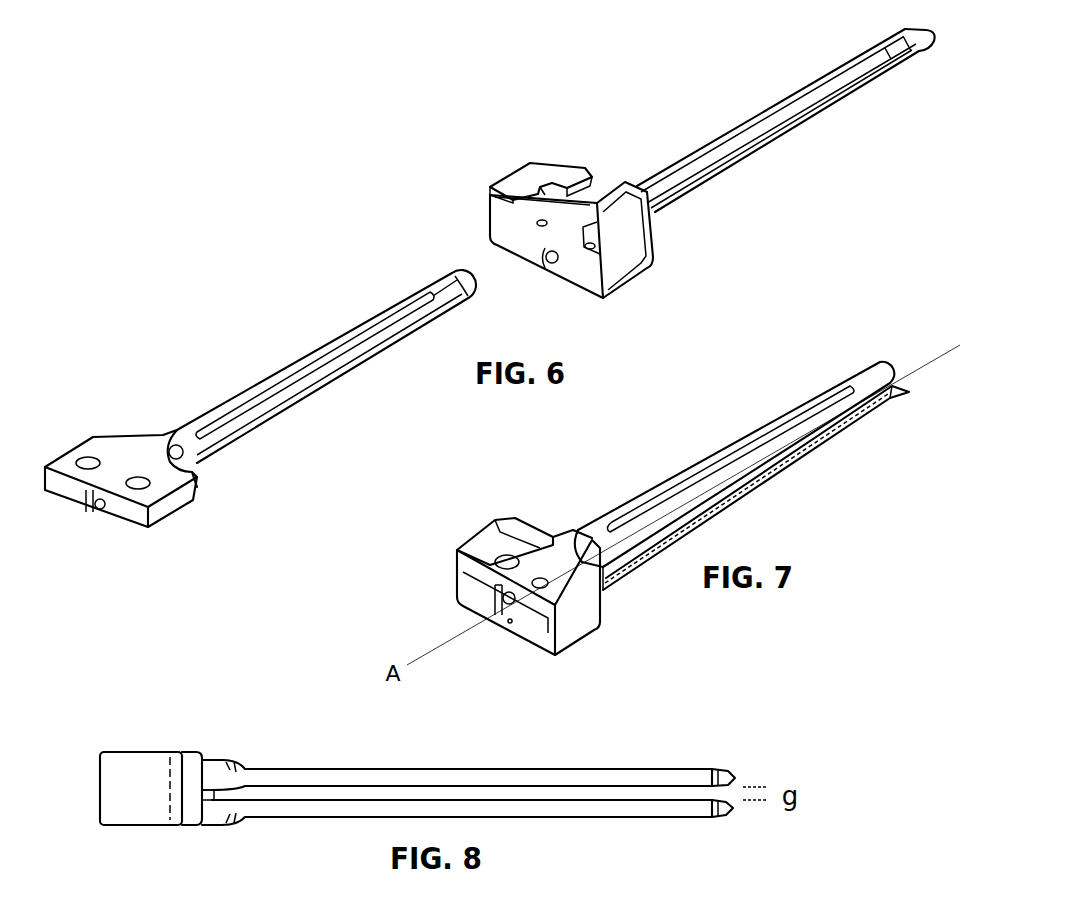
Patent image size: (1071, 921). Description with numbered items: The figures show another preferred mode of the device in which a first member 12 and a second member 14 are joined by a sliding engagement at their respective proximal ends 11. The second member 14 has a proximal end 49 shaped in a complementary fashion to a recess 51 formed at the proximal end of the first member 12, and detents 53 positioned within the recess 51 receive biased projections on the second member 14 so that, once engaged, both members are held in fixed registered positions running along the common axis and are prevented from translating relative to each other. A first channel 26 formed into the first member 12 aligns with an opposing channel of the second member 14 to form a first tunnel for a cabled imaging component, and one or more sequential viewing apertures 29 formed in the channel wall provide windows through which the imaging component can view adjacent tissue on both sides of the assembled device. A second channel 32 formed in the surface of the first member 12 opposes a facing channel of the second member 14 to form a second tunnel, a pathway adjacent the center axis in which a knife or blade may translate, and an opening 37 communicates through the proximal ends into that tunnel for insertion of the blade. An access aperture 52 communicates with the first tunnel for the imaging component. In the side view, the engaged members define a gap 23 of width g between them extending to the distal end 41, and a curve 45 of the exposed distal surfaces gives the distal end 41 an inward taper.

In FIG. 7, the proximal end 11 is at (467, 567).
In FIG. 6, the first member 12 is at (493, 222).
In FIG. 8, the first member 12 is at (218, 802).
In FIG. 6, the second member 14 is at (46, 466).
In FIG. 8, the second member 14 is at (205, 778).
In FIG. 8, the gap 23 is at (730, 798).
In FIG. 6, the first channel 26 is at (782, 120).
In FIG. 6, the apertures 29 is at (327, 355).
In FIG. 7, the apertures 29 is at (703, 478).
In FIG. 6, the second channel 32 is at (663, 177).
In FIG. 7, the opening 37 is at (500, 602).
In FIG. 7, the distal end 41 is at (882, 358).
In FIG. 8, the distal end 41 is at (718, 770).
In FIG. 8, the curve 45 is at (724, 780).
In FIG. 6, the proximal end 49 is at (173, 510).
In FIG. 6, the top surface 51 is at (572, 207).
In FIG. 6, the access aperture 52 is at (551, 263).
In FIG. 7, the access aperture 52 is at (510, 623).
In FIG. 6, the detents 53 is at (542, 226).